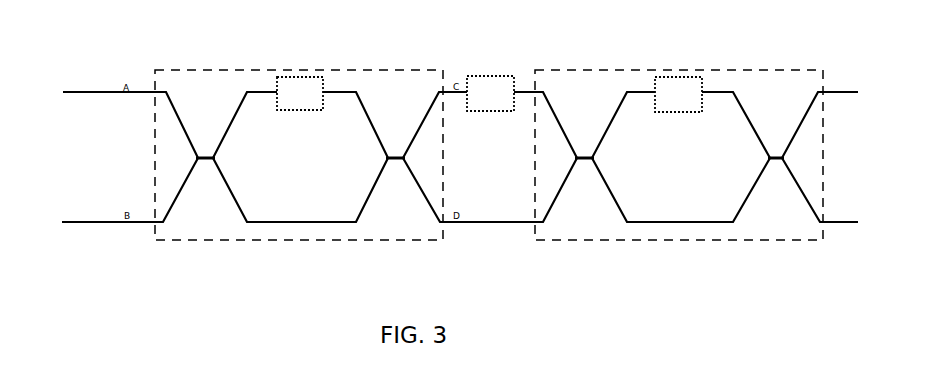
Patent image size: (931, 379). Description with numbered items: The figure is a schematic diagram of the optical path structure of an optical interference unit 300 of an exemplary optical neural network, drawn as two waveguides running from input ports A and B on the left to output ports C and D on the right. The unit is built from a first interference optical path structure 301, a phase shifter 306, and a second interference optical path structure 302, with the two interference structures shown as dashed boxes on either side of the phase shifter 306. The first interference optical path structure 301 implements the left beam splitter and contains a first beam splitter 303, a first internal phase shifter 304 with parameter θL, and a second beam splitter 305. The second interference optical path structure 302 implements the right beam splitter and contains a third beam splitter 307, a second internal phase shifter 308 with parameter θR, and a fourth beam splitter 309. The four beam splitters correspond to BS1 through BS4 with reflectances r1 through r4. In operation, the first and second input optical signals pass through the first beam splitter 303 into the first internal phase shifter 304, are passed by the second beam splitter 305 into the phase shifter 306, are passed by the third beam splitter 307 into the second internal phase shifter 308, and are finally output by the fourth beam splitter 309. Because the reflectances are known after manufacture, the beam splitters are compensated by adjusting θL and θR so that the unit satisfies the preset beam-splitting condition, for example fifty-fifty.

The optical interference unit 300 is at (100, 22).
The first interference optical path structure 301 is at (265, 240).
The second interference optical path structure 302 is at (663, 240).
The first beam splitter 303 is at (204, 160).
The first internal phase shifter 304 is at (296, 77).
The second beam splitter 305 is at (395, 160).
The phase shifter 306 is at (486, 76).
The third beam splitter 307 is at (583, 160).
The second internal phase shifter 308 is at (674, 77).
The fourth beam splitter 309 is at (775, 160).